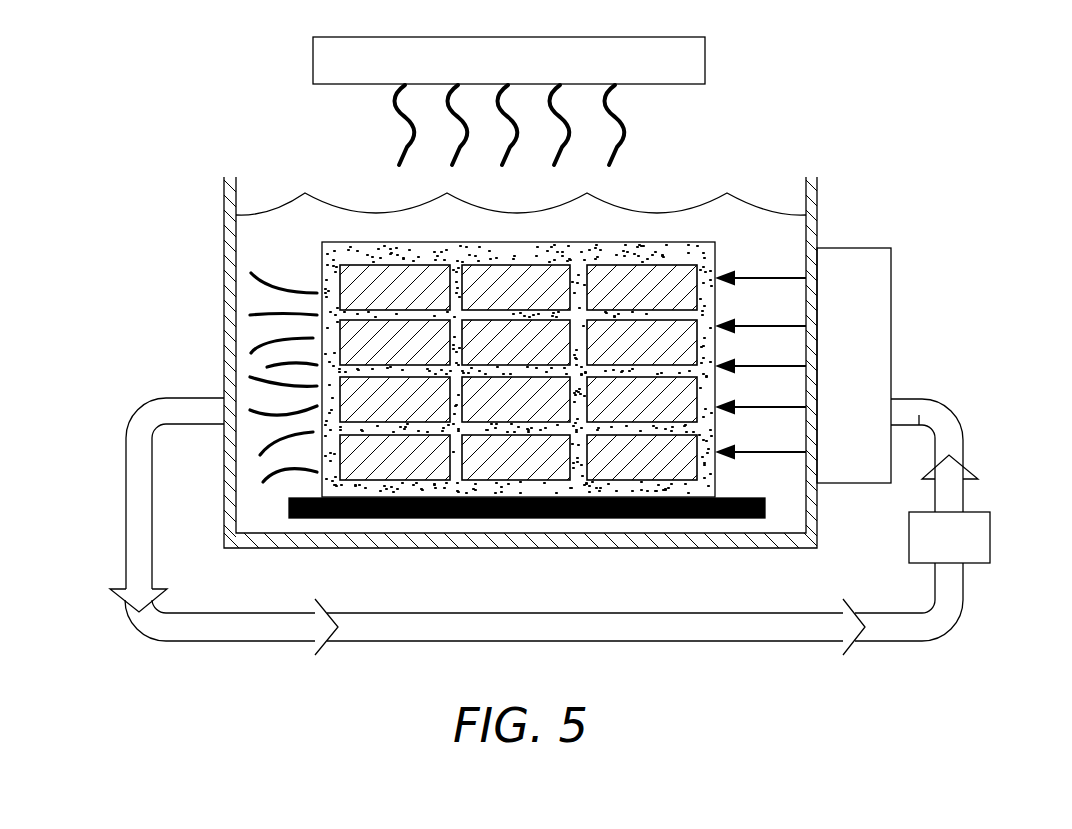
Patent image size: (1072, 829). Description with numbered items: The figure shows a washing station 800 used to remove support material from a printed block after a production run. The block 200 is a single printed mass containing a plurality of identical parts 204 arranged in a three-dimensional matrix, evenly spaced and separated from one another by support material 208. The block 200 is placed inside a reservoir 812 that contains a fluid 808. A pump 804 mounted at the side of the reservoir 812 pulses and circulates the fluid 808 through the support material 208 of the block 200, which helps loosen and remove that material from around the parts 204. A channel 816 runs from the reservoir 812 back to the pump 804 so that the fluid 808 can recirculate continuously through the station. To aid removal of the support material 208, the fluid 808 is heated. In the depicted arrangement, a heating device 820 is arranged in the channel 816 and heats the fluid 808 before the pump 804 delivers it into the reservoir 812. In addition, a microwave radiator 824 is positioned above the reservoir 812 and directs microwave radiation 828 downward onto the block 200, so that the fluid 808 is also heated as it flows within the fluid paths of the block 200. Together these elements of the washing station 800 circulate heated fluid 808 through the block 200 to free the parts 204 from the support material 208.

The washing station 800 is at (221, 141).
The reservoir 812 is at (226, 270).
The fluid 808 is at (706, 185).
The block 200 is at (377, 232).
The parts 204 is at (533, 268).
The support material 208 is at (635, 253).
The pump 804 is at (891, 277).
The channel 816 is at (697, 642).
The heating device 820 is at (992, 530).
The microwave radiator 824 is at (313, 57).
The microwave radiation 828 is at (376, 113).